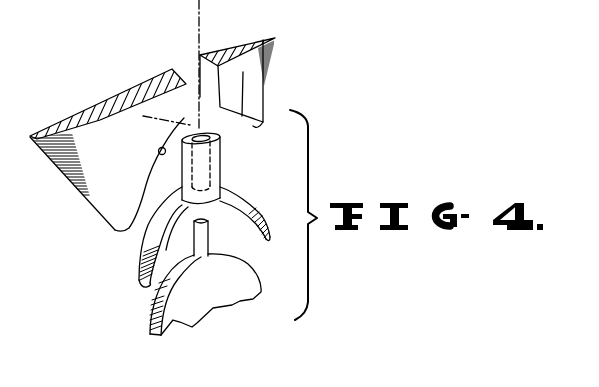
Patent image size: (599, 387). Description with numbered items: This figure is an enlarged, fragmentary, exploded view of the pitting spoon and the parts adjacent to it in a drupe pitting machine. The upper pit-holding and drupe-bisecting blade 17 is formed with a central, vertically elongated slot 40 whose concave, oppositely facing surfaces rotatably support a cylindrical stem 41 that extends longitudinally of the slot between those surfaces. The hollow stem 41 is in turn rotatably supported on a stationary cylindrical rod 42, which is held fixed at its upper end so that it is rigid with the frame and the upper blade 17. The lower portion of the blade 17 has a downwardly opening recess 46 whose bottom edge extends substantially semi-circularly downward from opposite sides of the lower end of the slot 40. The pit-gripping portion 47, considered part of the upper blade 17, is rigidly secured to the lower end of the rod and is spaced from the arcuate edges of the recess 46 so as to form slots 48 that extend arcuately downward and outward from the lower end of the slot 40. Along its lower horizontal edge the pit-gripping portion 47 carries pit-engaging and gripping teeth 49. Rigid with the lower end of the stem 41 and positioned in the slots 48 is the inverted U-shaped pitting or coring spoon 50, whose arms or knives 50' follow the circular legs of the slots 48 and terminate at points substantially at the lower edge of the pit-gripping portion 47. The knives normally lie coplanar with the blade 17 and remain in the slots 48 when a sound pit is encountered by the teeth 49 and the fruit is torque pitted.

The upper pit-holding blade 17 is at (81, 194).
The central vertically elongated slot 40 is at (179, 78).
The cylindrical stem 41 is at (183, 170).
The stationary cylindrical rod 42 is at (208, 234).
The downwardly opening recess 46 is at (158, 152).
The pit-gripping portion 47 is at (160, 330).
The arcuate slots 48 is at (262, 127).
The pit-gripping teeth 49 is at (230, 306).
The pitting spoon 50 is at (218, 235).
The arms or knives 50' is at (195, 238).